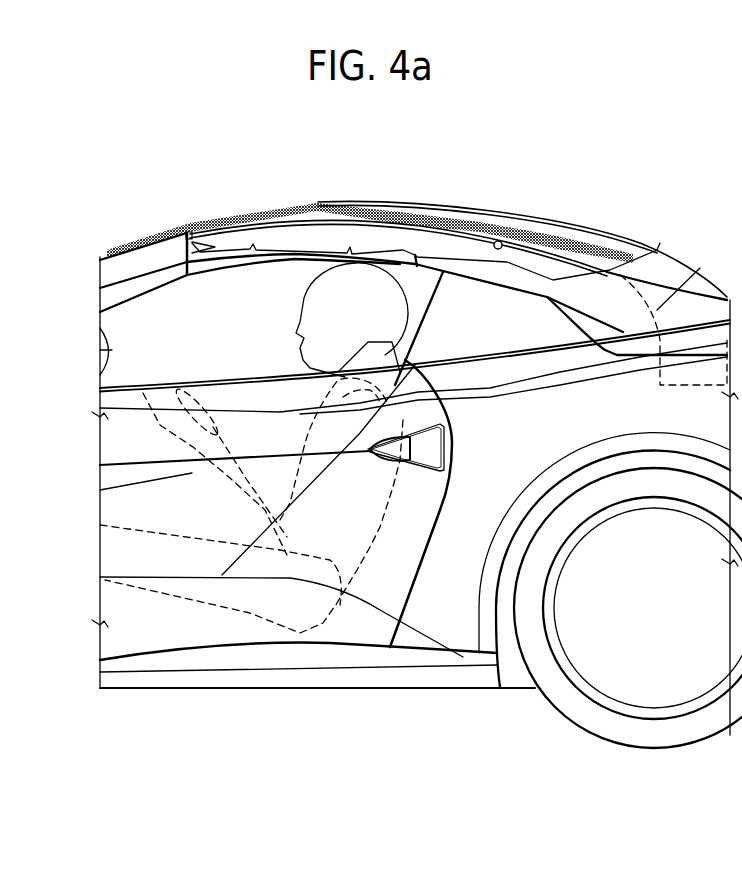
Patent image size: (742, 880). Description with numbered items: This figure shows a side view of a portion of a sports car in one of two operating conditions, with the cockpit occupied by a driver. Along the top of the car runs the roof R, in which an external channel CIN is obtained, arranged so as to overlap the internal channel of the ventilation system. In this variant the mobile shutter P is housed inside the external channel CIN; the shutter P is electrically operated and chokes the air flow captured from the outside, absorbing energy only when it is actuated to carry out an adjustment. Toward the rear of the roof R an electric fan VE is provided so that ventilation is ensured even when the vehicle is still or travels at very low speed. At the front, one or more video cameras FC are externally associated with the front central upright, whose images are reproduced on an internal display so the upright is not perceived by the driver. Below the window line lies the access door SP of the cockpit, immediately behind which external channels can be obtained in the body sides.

The video camera FC is at (189, 233).
The external channel CIN is at (318, 212).
The roof R is at (445, 203).
The mobile shutter P is at (543, 240).
The electric fan VE is at (693, 273).
The access door SP is at (223, 627).